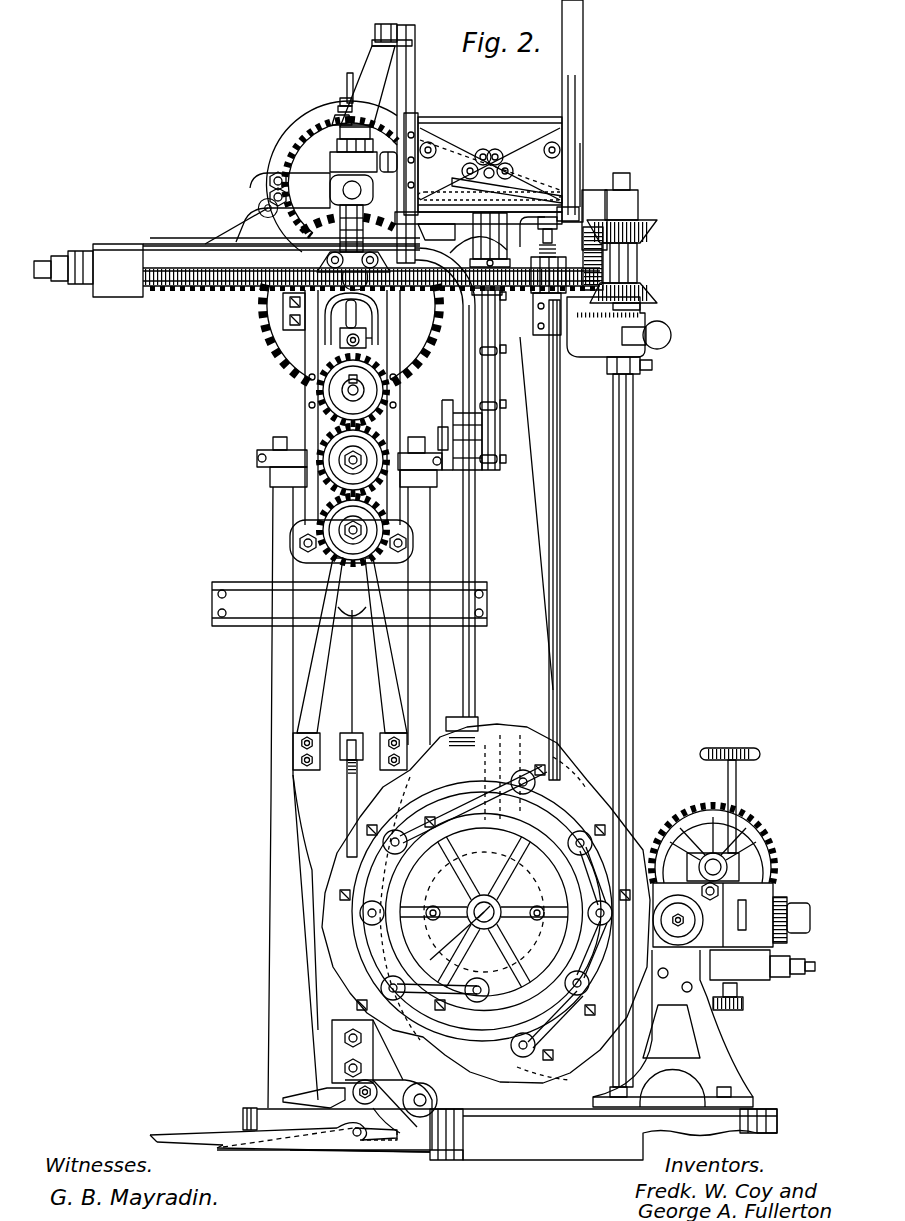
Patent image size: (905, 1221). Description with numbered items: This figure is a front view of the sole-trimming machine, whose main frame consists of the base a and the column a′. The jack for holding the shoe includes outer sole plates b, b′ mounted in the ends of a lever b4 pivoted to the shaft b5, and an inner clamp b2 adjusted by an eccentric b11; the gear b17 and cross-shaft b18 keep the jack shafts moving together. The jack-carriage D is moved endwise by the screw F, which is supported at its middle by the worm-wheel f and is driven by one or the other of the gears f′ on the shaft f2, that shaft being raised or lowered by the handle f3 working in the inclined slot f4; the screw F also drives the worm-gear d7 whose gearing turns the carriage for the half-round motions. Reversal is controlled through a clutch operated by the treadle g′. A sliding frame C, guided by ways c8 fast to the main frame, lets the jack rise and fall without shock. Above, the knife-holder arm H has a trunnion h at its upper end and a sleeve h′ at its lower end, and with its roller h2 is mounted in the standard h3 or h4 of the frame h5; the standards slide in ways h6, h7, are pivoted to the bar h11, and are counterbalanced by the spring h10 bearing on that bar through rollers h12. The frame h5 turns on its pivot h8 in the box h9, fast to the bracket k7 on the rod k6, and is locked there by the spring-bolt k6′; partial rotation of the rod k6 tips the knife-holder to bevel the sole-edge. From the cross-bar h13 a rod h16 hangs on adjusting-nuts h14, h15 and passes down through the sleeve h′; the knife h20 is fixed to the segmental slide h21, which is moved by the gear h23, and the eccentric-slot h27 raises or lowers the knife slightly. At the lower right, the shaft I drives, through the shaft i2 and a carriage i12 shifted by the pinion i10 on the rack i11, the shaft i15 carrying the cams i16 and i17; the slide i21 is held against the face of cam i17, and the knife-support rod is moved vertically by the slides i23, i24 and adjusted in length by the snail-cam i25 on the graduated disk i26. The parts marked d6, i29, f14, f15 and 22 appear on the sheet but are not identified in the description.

The screw F is at (178, 293).
The trunnion h is at (372, 31).
The standard h3 is at (405, 66).
The arm H is at (367, 86).
The rod h16 is at (350, 73).
The adjusting-nut h14 is at (340, 100).
The cross-bar h13 is at (338, 108).
The adjusting-nut h15 is at (333, 120).
The worm-wheel f is at (300, 148).
The sleeve h′ is at (341, 177).
The roller h2 is at (378, 172).
The eccentric-slot h27 is at (330, 200).
The knife h20 is at (317, 266).
The segmental slide h21 is at (300, 243).
The gear h23 is at (392, 222).
The ways h6 is at (416, 116).
The frame h5 is at (530, 117).
The bar h11 is at (483, 150).
The rollers h12 is at (463, 170).
The spring h10 is at (530, 192).
The pivot h8 is at (494, 194).
The standard h4 is at (582, 44).
The ways h7 is at (567, 167).
The worm-gear d7 is at (470, 232).
The box h9 is at (490, 240).
The bracket k7 is at (497, 235).
The spring-bolt k6′ is at (557, 210).
The gears f′ is at (657, 232).
The handle f3 is at (671, 335).
The inclined slot f4 is at (650, 352).
The shaft f2 is at (633, 405).
The rod k6 is at (560, 400).
The jack-carriage D is at (312, 350).
The inner clamp b2 is at (283, 338).
The outer plate b is at (346, 310).
The lever b4 is at (340, 338).
The outer plate b′ is at (374, 345).
The shaft b5 is at (345, 390).
The eccentric b11 is at (353, 450).
The gear b17 is at (353, 530).
The cross-shaft b18 is at (300, 530).
The column a′ is at (287, 722).
The sliding frame C is at (308, 902).
The ways c8 is at (262, 630).
The rod d6 is at (365, 785).
The rod and handle i29 is at (463, 570).
The slide i24 is at (490, 430).
The graduated disk i26 is at (442, 402).
The snail-cam i25 is at (453, 438).
The slide i23 is at (500, 740).
The cam i17 is at (560, 760).
The cam i16 is at (440, 880).
The shaft i15 is at (450, 936).
The gear 22 is at (655, 830).
The shaft I is at (713, 870).
The slide i21 is at (713, 914).
The shaft i2 is at (800, 905).
The carriage i12 is at (800, 957).
The pinion i10 is at (743, 1004).
The rack i11 is at (735, 1010).
The base a is at (497, 1134).
The lever f15 is at (305, 1090).
The treadle g′ is at (210, 1133).
The lever f14 is at (275, 1153).